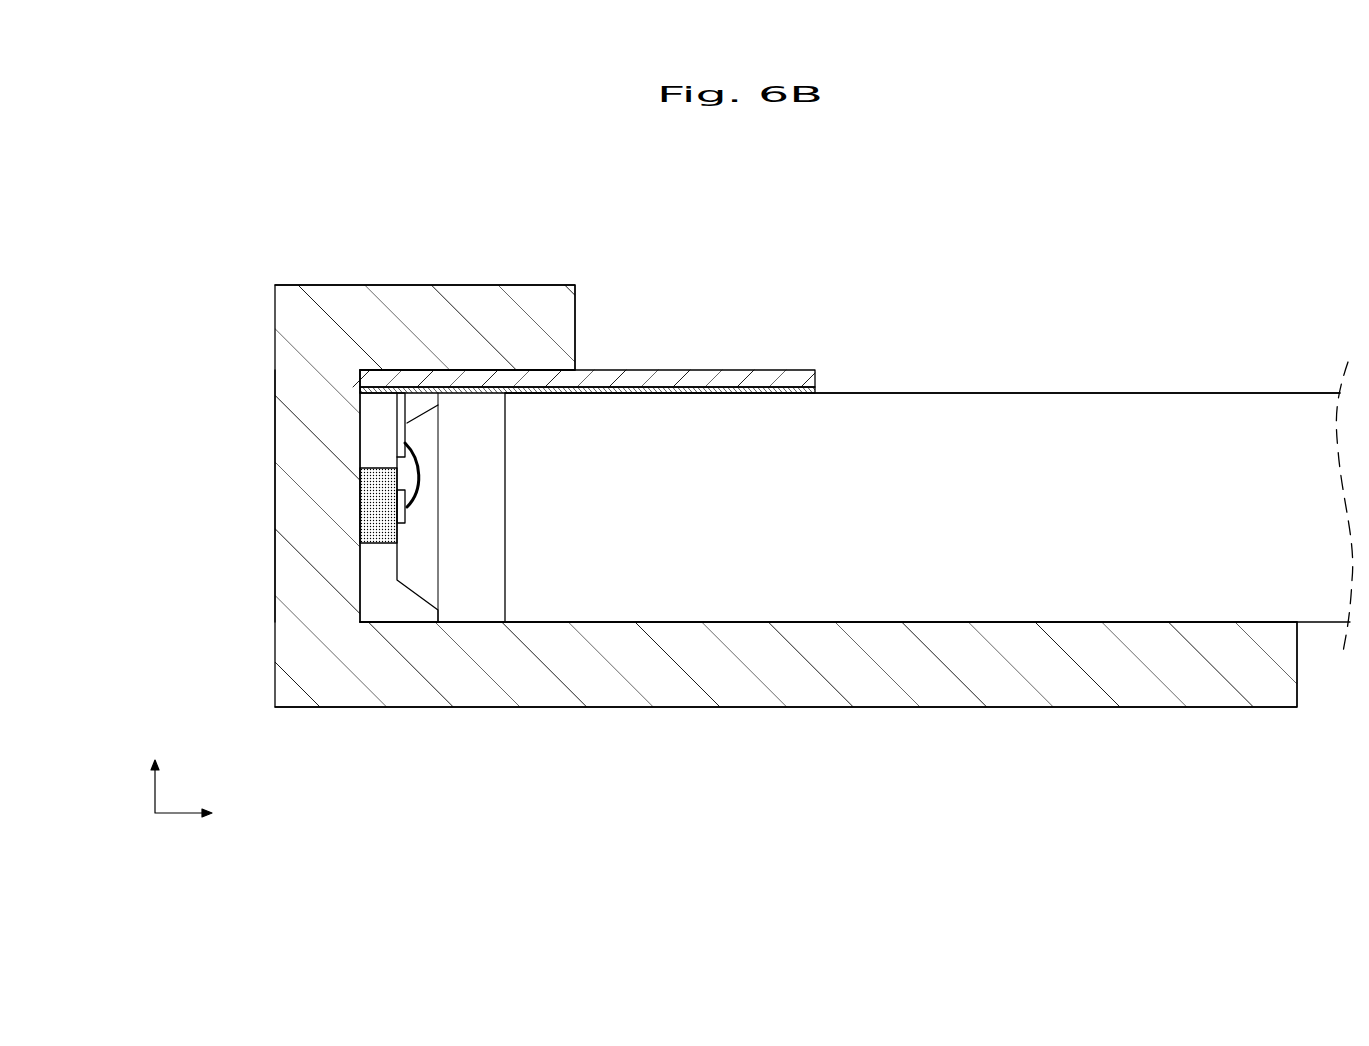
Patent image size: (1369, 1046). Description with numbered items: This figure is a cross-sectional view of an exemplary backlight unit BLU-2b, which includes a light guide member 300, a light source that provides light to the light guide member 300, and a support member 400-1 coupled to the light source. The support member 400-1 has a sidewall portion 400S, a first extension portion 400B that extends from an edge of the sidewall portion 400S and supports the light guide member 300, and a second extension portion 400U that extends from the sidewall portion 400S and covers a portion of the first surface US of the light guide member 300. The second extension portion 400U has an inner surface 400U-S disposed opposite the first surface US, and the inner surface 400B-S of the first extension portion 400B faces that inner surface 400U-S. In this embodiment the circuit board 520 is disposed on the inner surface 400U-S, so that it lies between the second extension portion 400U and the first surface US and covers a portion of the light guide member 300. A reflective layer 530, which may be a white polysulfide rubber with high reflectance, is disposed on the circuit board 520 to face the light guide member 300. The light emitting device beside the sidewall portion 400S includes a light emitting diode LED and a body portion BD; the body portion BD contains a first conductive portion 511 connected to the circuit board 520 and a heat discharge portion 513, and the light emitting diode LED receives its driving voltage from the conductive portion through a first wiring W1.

The backlight unit BLU-2b is at (1138, 266).
The support member 400-1 is at (176, 315).
The second extension portion 400U is at (300, 322).
The sidewall portion 400S is at (293, 493).
The first extension portion 400B is at (305, 648).
The inner surface 400U-S is at (470, 378).
The inner surface 400B-S is at (890, 622).
The circuit board 520 is at (667, 380).
The reflective layer 530 is at (732, 392).
The light guide member 300 is at (977, 413).
The first surface US is at (888, 393).
The body portion BD is at (377, 602).
The first conductive portion 511 is at (403, 412).
The heat discharge portion 513 is at (380, 487).
The light emitting diode LED is at (410, 513).
The first wiring W1 is at (425, 475).